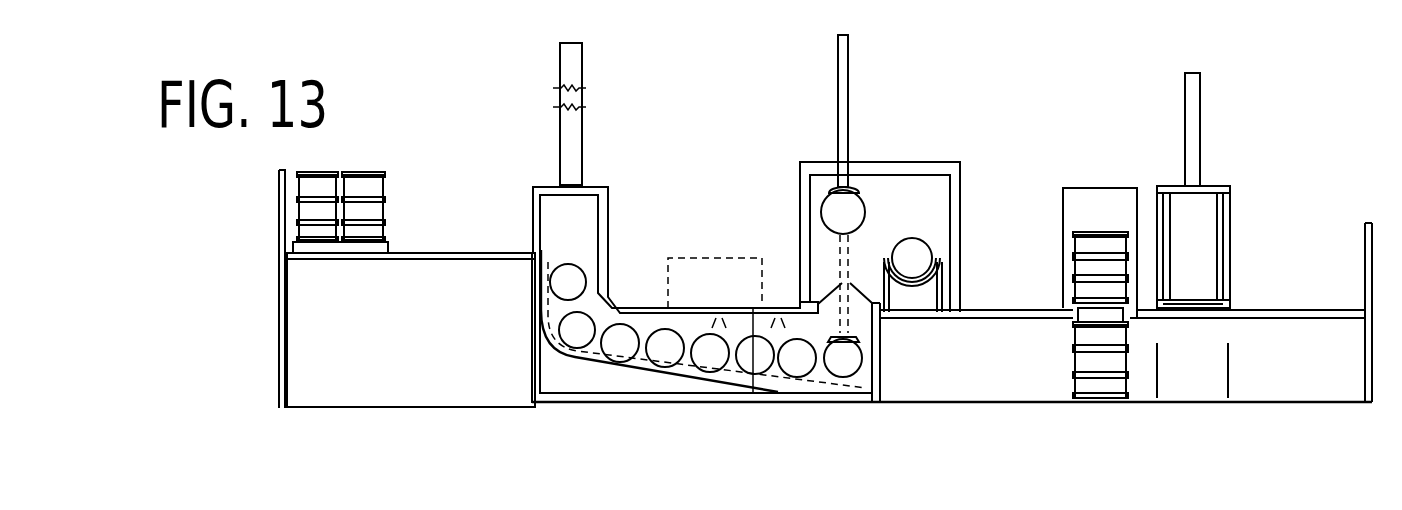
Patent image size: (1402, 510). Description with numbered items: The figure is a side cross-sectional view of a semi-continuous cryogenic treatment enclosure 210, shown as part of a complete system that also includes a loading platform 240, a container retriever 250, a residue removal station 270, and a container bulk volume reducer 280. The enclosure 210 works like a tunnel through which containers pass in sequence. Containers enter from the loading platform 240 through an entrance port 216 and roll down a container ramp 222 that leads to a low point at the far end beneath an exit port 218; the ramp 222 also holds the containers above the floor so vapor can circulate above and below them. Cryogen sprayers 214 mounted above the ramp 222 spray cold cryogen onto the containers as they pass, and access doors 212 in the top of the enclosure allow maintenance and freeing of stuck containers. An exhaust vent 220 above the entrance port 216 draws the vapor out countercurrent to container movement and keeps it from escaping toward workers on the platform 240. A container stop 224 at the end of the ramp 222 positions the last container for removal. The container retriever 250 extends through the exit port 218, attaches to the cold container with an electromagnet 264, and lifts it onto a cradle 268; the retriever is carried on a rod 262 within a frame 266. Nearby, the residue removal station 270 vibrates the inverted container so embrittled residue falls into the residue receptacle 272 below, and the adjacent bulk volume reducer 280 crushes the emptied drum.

The cryogenic treatment enclosure 210 is at (665, 409).
The access door 212 is at (672, 258).
The cryogen sprayer 214 is at (778, 312).
The entrance port 216 is at (533, 224).
The exit port 218 is at (863, 288).
The exhaust vent 220 is at (582, 138).
The container ramp 222 is at (604, 364).
The container stop 224 is at (880, 363).
The loading platform 240 is at (422, 253).
The container retriever 250 is at (894, 136).
The actuator rod 262 is at (848, 72).
The electromagnet 264 is at (861, 190).
The frame 266 is at (925, 162).
The cradle 268 is at (943, 278).
The residue removal station 270 is at (1102, 170).
The residue receptacle 272 is at (1102, 397).
The container bulk volume reducer 280 is at (1212, 153).